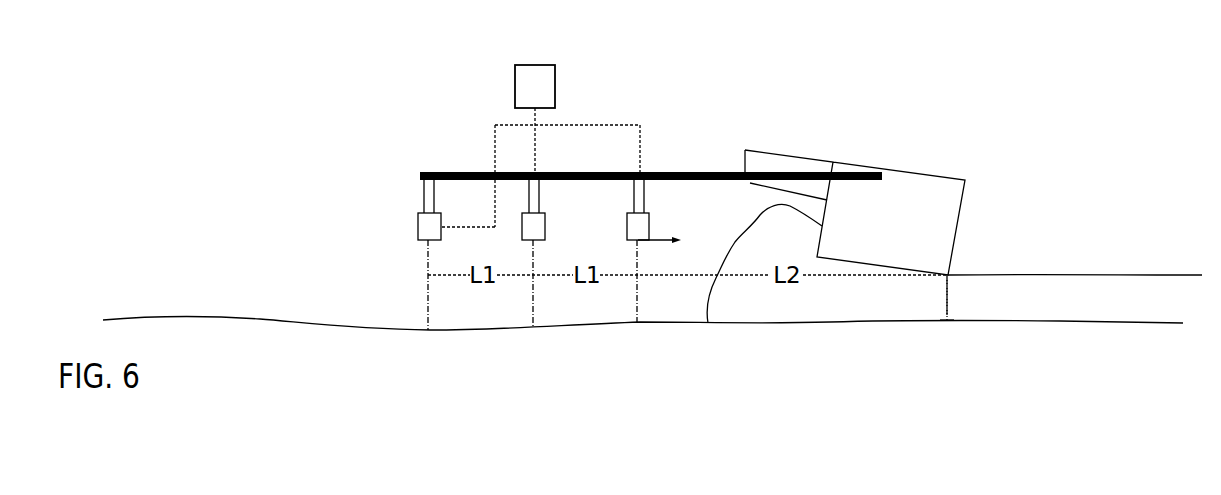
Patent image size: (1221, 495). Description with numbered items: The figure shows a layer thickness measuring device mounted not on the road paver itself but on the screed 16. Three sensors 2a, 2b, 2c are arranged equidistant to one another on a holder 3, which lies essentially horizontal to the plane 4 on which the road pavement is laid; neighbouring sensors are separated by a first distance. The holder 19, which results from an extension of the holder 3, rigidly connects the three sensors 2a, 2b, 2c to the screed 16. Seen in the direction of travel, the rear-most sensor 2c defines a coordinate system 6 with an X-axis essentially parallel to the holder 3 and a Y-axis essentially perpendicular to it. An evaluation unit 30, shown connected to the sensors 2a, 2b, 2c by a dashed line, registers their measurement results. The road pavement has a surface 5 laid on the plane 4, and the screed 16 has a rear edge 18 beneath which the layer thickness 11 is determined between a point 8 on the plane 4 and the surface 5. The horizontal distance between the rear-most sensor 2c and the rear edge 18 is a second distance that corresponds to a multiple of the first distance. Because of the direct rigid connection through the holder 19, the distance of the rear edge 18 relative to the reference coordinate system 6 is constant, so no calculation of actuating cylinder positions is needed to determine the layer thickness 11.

The sensor 2a is at (418, 243).
The sensor 2b is at (522, 243).
The sensor 2c is at (627, 243).
The holder 3 is at (424, 173).
The plane 4 is at (305, 320).
The surface 5 is at (1078, 274).
The coordinate system 6 is at (637, 240).
The point 8 is at (947, 321).
The layer thickness 11 is at (950, 292).
The screed 16 is at (948, 177).
The rear edge 18 is at (950, 273).
The holder 19 is at (673, 172).
The evaluation unit 30 is at (536, 66).